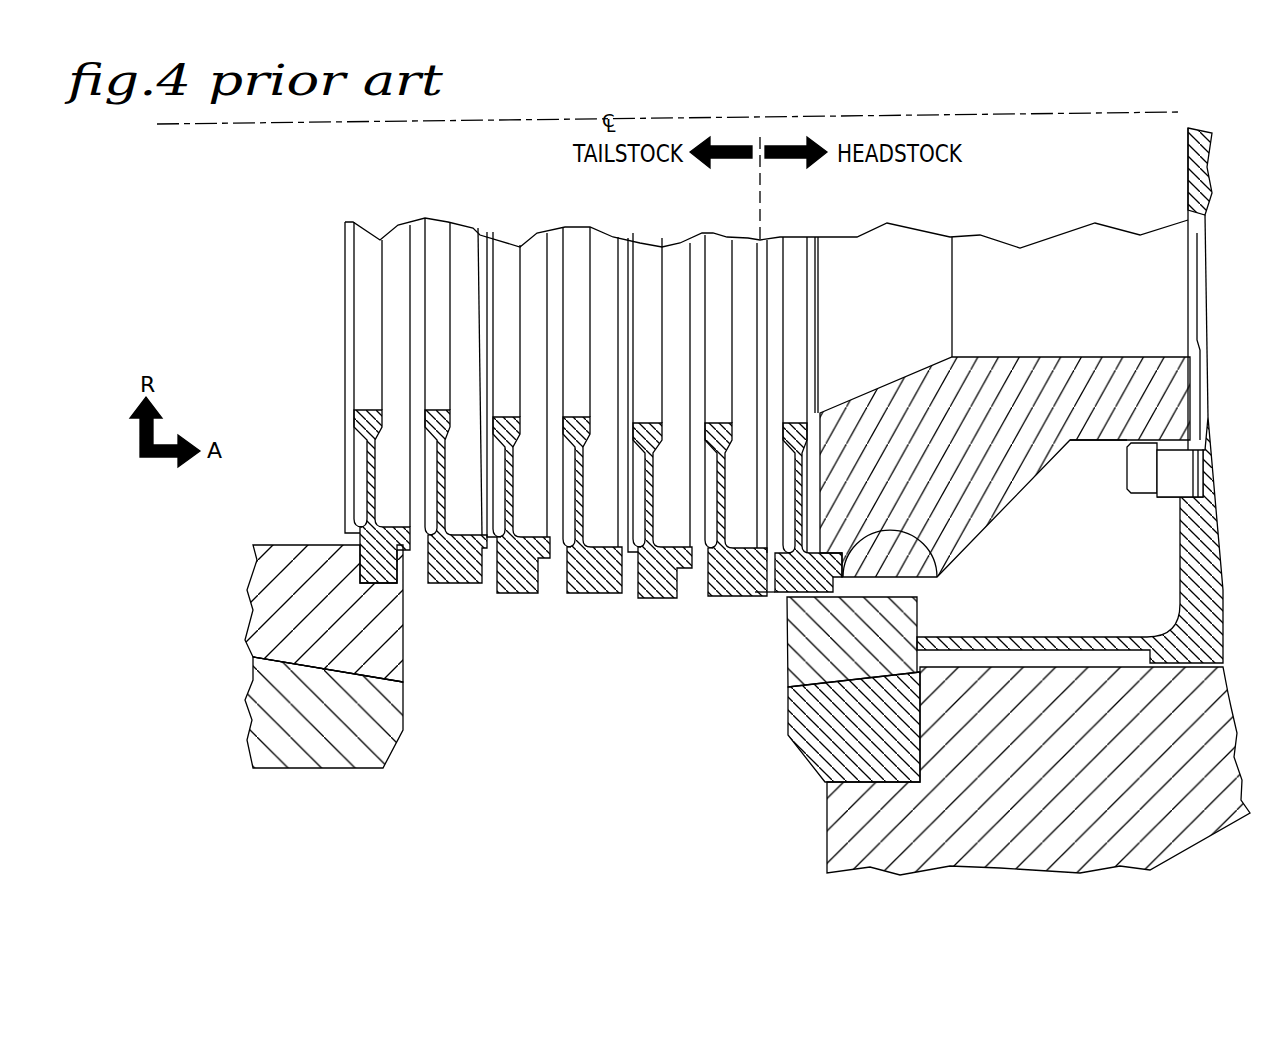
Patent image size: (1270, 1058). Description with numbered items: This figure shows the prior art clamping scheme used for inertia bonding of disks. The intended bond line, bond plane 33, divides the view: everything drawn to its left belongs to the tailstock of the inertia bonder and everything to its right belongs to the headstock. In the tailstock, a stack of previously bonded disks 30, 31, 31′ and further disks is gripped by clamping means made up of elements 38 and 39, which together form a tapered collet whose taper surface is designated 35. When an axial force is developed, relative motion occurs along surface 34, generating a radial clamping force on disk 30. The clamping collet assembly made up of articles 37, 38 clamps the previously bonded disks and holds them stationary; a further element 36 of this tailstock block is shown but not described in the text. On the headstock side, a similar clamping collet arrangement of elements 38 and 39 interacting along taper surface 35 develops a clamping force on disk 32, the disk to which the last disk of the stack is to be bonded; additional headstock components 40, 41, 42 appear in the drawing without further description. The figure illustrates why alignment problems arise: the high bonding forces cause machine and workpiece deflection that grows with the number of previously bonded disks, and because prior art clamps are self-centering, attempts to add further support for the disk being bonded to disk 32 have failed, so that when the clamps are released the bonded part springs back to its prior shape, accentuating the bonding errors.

The disk 30 is at (368, 400).
The seal tooth 31 is at (437, 357).
The seal tooth 31′ is at (500, 233).
The disk 32 is at (793, 380).
The bond plane 33 is at (782, 547).
The surface 34 is at (273, 660).
The taper surface 35 is at (790, 690).
The lower casing section 36 is at (272, 703).
The clamping collet article 37 is at (292, 615).
The collet element 38 is at (843, 768).
The collet element 39 is at (880, 635).
The liner plate 40 is at (1057, 637).
The bolt 41 is at (1037, 450).
The recess 42 is at (930, 530).